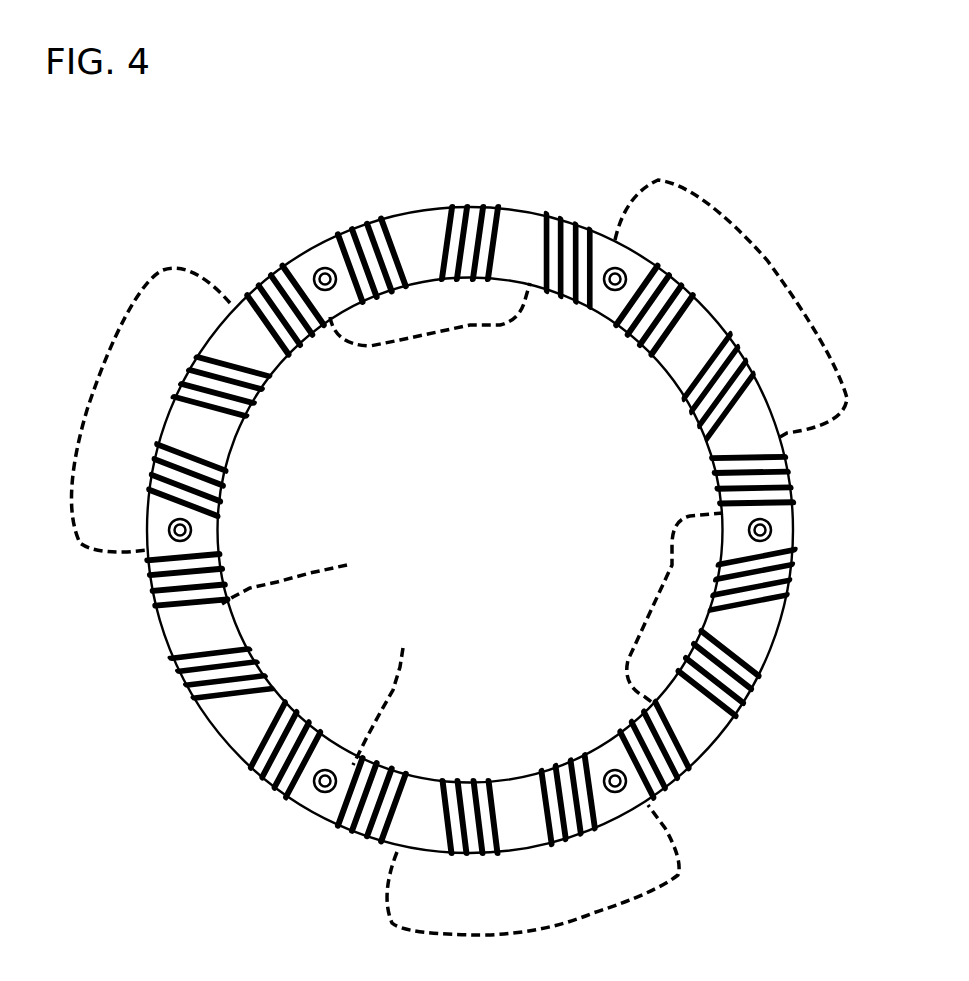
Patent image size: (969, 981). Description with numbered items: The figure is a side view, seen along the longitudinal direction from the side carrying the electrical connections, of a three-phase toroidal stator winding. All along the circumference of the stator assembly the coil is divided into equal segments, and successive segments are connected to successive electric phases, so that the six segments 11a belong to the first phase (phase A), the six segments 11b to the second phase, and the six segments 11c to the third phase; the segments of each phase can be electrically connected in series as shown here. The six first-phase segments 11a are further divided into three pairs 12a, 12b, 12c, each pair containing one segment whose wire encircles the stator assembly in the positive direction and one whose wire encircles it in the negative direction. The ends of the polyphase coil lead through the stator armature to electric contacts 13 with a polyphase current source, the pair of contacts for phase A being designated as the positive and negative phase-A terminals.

The segments corresponding to the first phase 11a is at (575, 217).
The segments corresponding to the second phase 11b is at (473, 203).
The segments corresponding to the third phase 11c is at (343, 223).
The pair of segments 12a is at (625, 725).
The pair of segments 12b is at (563, 300).
The pair of segments 12c is at (300, 347).
The electric contacts 13 is at (352, 560).